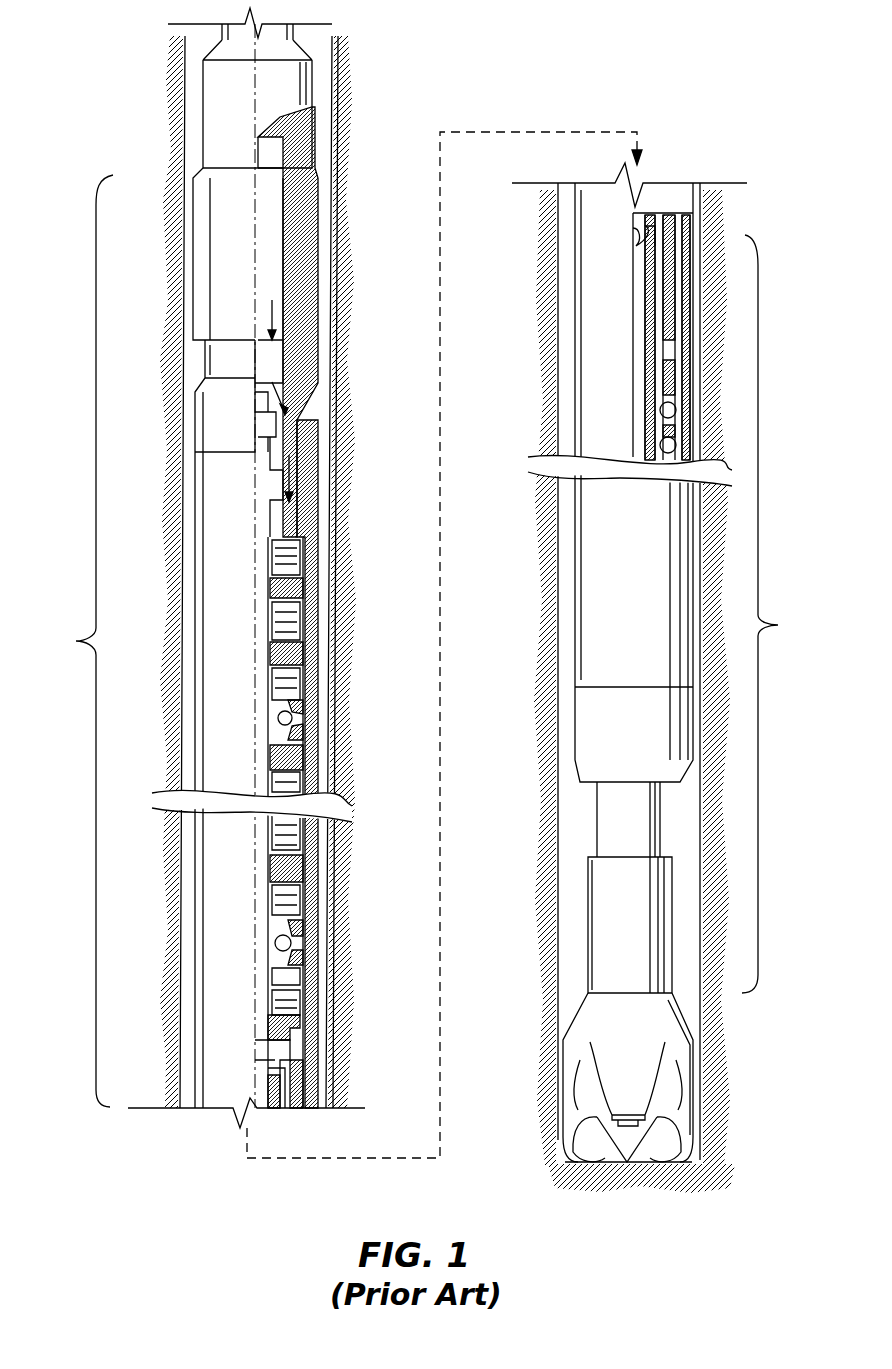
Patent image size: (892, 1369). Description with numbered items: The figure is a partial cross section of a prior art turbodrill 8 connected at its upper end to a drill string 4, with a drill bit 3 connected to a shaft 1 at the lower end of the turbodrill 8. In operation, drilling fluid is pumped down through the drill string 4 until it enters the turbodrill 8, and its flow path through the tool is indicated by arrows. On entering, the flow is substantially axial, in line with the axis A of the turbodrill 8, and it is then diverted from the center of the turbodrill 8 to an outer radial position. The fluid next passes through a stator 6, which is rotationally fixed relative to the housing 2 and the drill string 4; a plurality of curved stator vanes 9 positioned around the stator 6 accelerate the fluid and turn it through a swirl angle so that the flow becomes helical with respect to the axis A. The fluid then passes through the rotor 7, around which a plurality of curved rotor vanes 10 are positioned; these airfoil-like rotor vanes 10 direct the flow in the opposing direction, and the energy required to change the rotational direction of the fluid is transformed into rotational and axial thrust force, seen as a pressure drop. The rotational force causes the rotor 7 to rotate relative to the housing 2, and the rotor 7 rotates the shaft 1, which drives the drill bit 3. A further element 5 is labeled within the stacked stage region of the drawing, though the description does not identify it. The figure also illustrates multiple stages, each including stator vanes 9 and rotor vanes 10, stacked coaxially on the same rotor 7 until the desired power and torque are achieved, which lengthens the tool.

The shaft 1 is at (608, 830).
The housing 2 is at (208, 506).
The drill bit 3 is at (578, 1072).
The drill string 4 is at (293, 32).
The ball 5 is at (291, 720).
The stator 6 is at (300, 650).
The rotor 7 is at (272, 615).
The turbodrill 8 is at (426, 641).
The stator vanes 9 is at (295, 580).
The rotor vanes 10 is at (300, 622).
The axis A is at (250, 246).